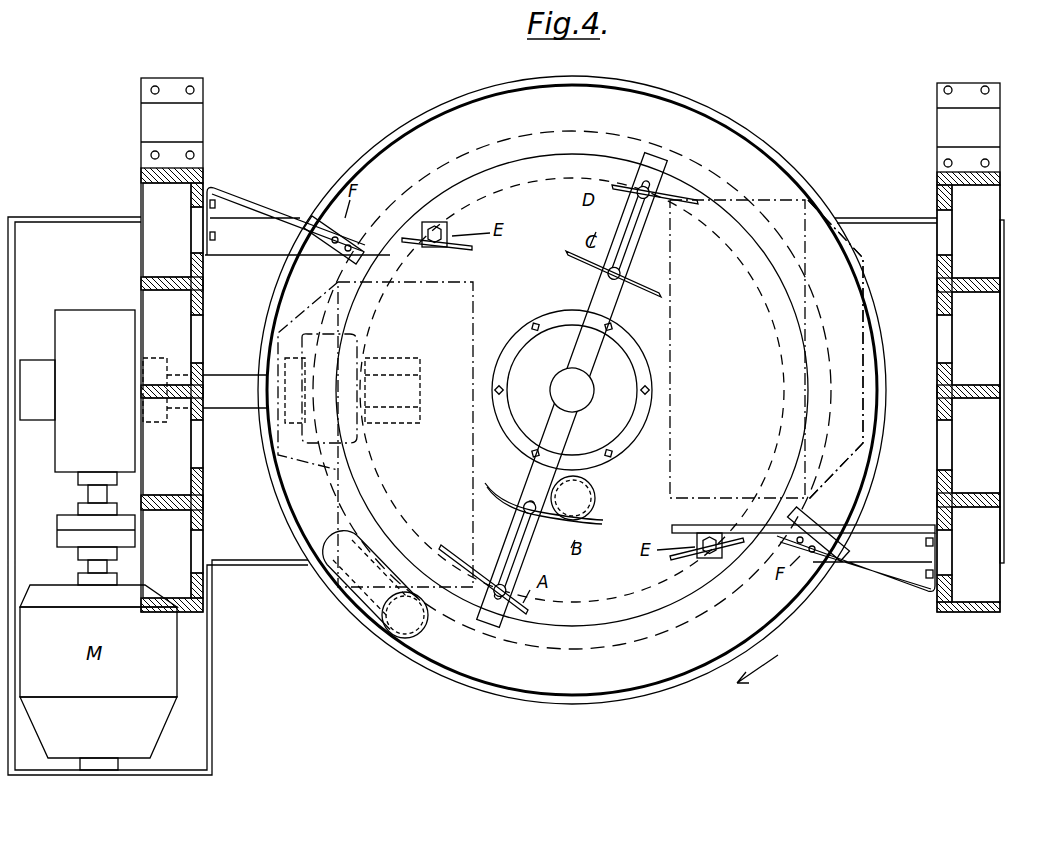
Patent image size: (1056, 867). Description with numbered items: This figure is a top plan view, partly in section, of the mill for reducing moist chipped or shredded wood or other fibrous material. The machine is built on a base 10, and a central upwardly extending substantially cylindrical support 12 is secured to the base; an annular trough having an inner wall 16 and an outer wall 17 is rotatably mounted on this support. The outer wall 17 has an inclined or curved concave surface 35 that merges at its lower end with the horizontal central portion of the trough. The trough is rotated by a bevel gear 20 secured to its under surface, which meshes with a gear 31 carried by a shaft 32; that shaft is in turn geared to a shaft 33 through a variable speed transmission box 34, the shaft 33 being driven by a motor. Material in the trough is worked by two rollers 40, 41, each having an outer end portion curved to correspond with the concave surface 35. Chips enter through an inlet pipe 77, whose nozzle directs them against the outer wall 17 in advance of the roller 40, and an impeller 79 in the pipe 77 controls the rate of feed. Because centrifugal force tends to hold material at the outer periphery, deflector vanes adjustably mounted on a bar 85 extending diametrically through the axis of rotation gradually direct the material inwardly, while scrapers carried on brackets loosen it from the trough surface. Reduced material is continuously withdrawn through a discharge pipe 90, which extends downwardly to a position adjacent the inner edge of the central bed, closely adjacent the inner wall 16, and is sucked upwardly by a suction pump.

The base 10 is at (895, 220).
The cylindrical support 12 is at (520, 347).
The inner wall 16 is at (568, 308).
The outer wall 17 is at (658, 95).
The bevel gear 20 is at (380, 300).
The gear 31 is at (366, 338).
The shaft 32 is at (226, 373).
The shaft 33 is at (92, 495).
The variable speed transmission box 34 is at (82, 320).
The concave surface 35 is at (487, 115).
The roller 40 is at (474, 283).
The roller 41 is at (672, 488).
The inlet pipe 77 is at (397, 627).
The impeller 79 is at (322, 572).
The bar 85 is at (595, 351).
The discharge pipe 90 is at (590, 493).